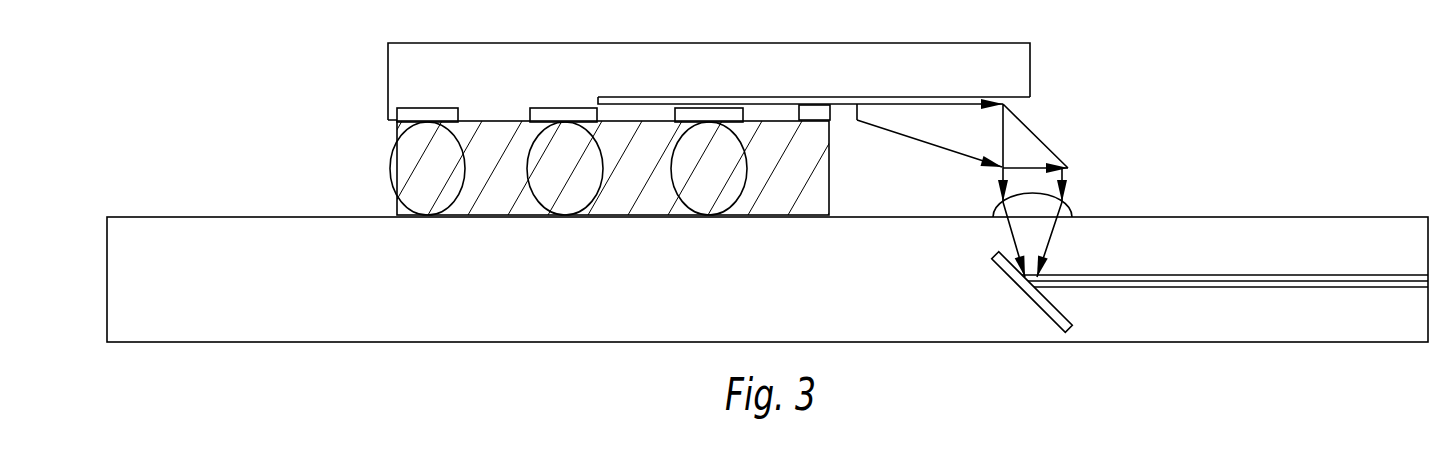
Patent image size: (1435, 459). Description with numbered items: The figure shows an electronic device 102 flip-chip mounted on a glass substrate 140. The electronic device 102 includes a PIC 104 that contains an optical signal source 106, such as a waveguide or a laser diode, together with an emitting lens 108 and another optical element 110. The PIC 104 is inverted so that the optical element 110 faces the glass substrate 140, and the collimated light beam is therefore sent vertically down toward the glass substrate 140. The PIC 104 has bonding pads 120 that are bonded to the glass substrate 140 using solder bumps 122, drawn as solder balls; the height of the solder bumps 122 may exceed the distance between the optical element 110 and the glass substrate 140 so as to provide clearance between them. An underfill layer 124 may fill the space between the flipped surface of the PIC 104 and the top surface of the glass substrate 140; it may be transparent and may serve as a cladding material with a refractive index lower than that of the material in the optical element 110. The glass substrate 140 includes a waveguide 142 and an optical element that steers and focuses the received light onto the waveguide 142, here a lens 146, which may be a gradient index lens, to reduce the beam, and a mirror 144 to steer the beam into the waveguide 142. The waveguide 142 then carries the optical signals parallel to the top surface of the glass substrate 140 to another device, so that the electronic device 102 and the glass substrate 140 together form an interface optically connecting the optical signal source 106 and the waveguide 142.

The electronic device 102 is at (773, 160).
The PIC 104 is at (388, 64).
The optical signal source 106 is at (817, 97).
The emitting lens 108 is at (846, 108).
The optical element 110 is at (1031, 140).
The bonding pads 120 is at (400, 116).
The solder bumps 122 is at (392, 165).
The underfill layer 124 is at (823, 167).
The glass substrate 140 is at (160, 228).
The waveguide 142 is at (1232, 290).
The mirror 144 is at (1030, 300).
The lens 146 is at (1023, 208).